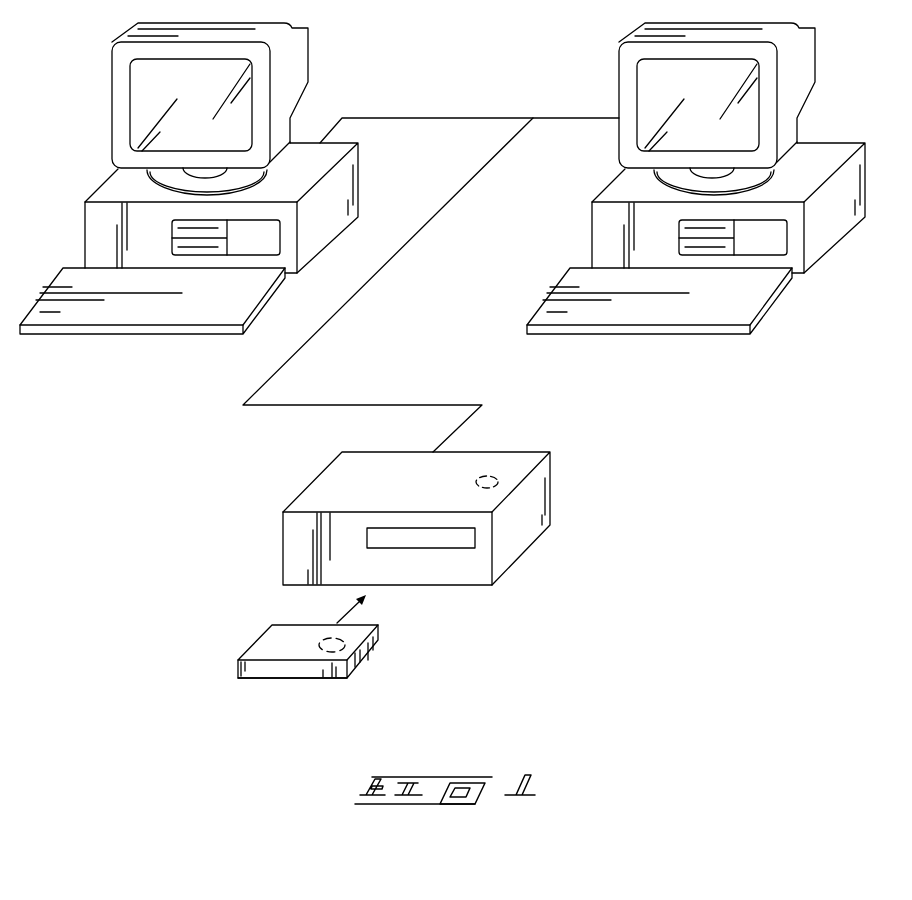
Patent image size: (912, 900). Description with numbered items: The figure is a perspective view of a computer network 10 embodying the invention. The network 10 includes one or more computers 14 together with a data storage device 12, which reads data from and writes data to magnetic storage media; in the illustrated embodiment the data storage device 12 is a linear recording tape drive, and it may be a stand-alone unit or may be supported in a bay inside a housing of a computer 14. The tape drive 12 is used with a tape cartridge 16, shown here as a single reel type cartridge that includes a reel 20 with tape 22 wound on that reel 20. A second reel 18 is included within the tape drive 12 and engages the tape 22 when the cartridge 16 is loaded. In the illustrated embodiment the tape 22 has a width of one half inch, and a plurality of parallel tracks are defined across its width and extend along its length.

The computer network 10 is at (707, 543).
The data storage device 12 is at (330, 487).
The computer 14 is at (115, 190).
The tape cartridge 16 is at (364, 657).
The second reel 18 is at (498, 477).
The reel 20 is at (322, 684).
The tape 22 is at (383, 637).